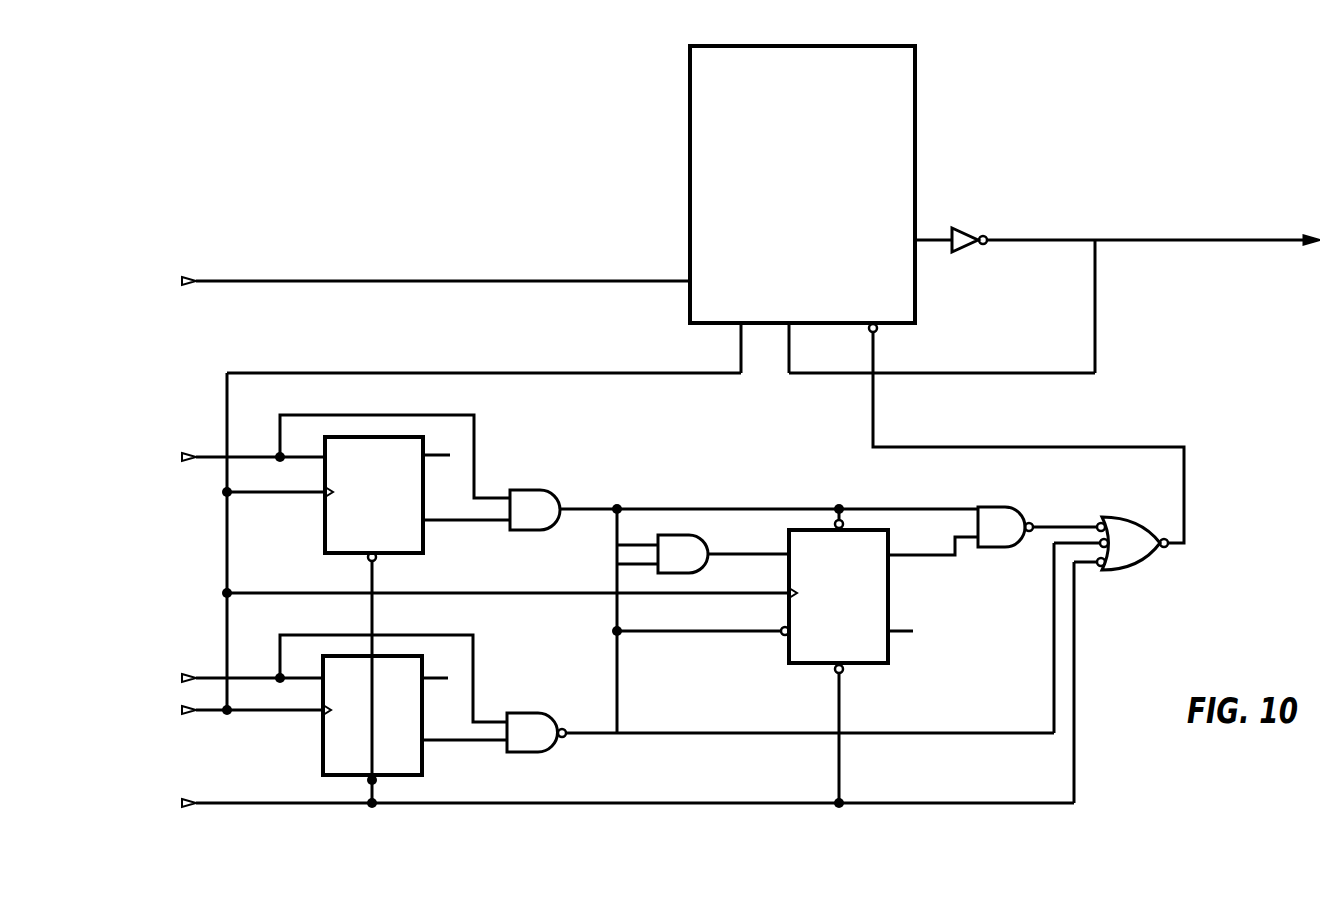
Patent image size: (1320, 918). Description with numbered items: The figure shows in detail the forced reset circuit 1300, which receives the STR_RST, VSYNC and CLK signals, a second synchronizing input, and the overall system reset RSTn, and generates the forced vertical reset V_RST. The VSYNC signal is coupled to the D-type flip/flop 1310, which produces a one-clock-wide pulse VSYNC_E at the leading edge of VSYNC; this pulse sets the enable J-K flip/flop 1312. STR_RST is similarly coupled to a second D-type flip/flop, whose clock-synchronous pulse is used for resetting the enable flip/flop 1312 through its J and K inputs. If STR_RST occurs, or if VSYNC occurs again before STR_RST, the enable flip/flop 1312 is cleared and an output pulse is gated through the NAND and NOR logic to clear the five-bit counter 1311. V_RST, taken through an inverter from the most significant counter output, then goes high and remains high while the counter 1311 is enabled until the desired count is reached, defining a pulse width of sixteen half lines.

The forced reset circuit 1300 is at (501, 822).
The D-type flip/flop 1310 is at (335, 520).
The 5-bit counter U0 1311 is at (888, 277).
The enable J-K flip/flop 1312 is at (863, 653).